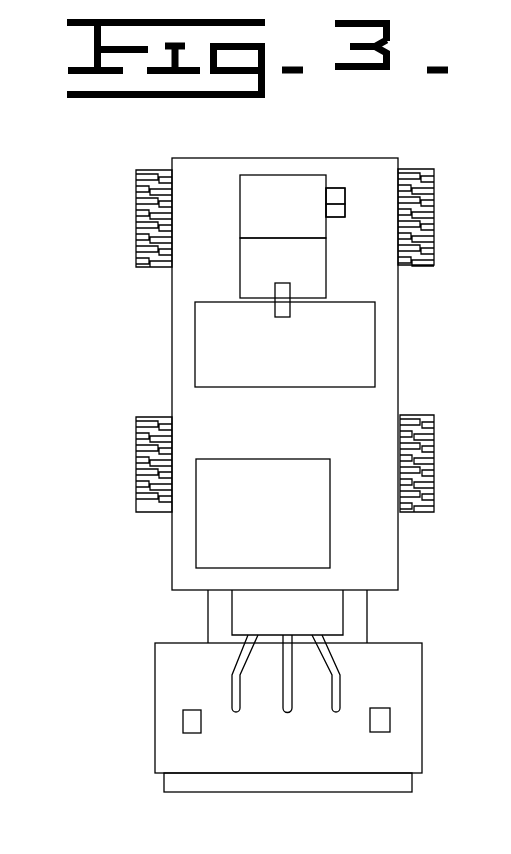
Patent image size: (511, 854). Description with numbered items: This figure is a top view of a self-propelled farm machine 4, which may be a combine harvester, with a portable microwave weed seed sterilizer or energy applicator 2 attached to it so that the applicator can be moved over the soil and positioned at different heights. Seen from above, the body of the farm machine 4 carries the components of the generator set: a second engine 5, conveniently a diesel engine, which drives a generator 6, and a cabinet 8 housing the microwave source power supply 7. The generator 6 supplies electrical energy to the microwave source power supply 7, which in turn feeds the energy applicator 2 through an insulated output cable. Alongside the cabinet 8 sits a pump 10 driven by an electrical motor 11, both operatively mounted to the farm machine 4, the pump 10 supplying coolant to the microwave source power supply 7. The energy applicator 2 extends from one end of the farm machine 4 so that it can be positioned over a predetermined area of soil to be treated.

The portable microwave weed seed sterilizer or energy applicator 2 is at (437, 688).
The self-propelled farm machine 4 is at (340, 505).
The second engine 5 is at (254, 273).
The generator 6 is at (362, 333).
The microwave source power supply 7 is at (340, 177).
The cabinet 8 is at (257, 218).
The pump 10 is at (345, 193).
The electrical motor 11 is at (339, 210).